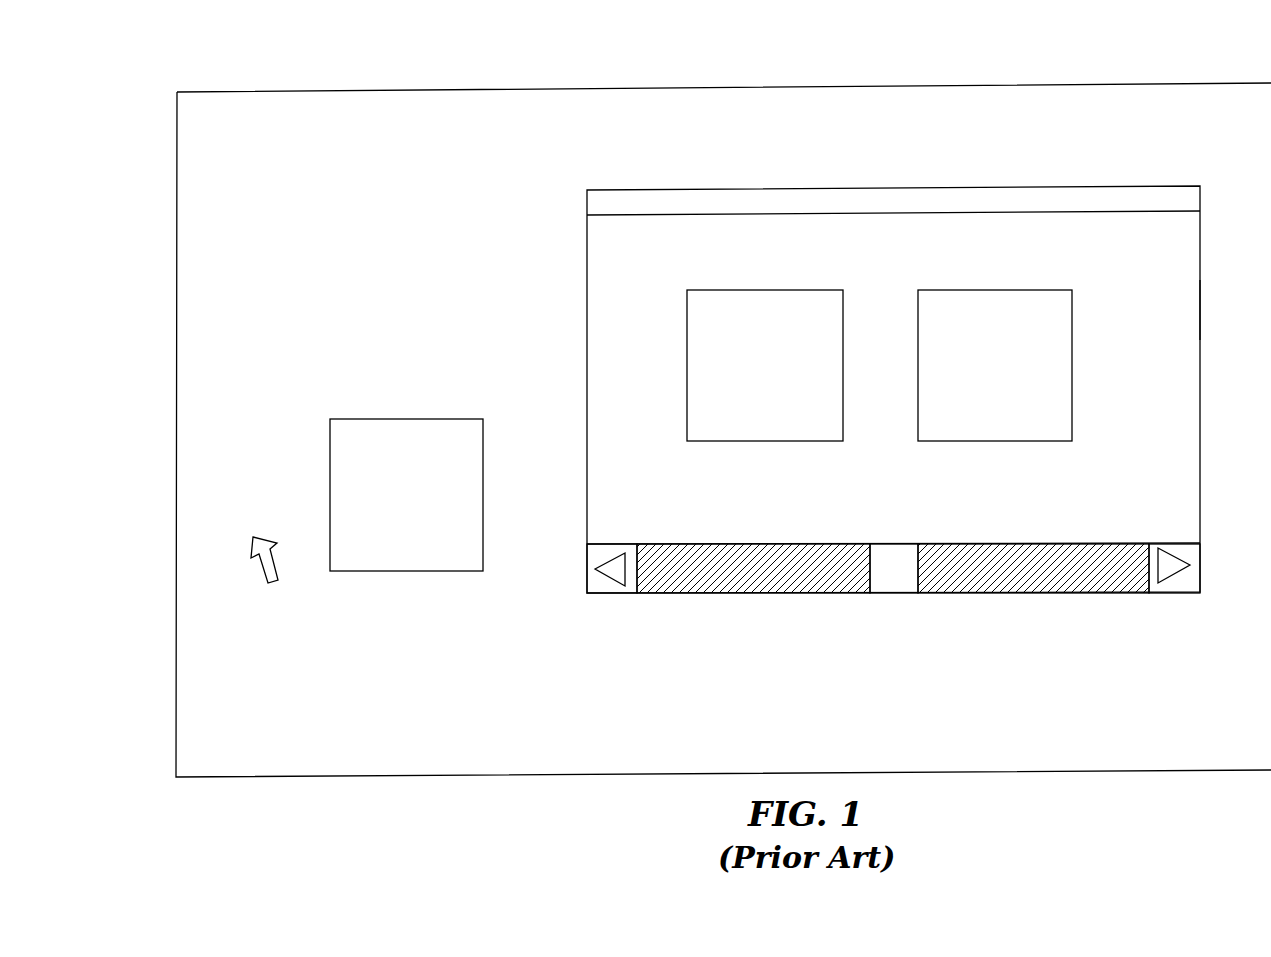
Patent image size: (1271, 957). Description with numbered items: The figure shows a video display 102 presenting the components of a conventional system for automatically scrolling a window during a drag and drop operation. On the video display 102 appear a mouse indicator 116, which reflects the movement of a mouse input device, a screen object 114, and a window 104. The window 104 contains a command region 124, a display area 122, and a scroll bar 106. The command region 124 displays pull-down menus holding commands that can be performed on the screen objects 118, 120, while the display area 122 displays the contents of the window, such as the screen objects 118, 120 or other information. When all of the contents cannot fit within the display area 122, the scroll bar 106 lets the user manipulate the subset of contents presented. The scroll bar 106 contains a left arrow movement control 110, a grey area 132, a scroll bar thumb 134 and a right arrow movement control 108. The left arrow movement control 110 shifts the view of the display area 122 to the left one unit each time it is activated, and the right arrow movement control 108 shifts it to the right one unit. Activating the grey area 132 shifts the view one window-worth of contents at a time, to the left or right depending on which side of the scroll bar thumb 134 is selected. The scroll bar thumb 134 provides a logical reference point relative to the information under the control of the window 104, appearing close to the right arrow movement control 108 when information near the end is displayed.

The video display 102 is at (1021, 88).
The window 104 is at (1124, 186).
The scroll bar 106 is at (1042, 617).
The right arrow movement control 108 is at (1172, 593).
The left arrow movement control 110 is at (610, 595).
The screen object 114 is at (425, 398).
The mouse indicator 116 is at (262, 533).
The screen object 118 is at (740, 290).
The screen object 120 is at (968, 290).
The display area 122 is at (1173, 310).
The command region 124 is at (688, 190).
The grey area 132 is at (752, 595).
The scroll bar thumb 134 is at (892, 595).